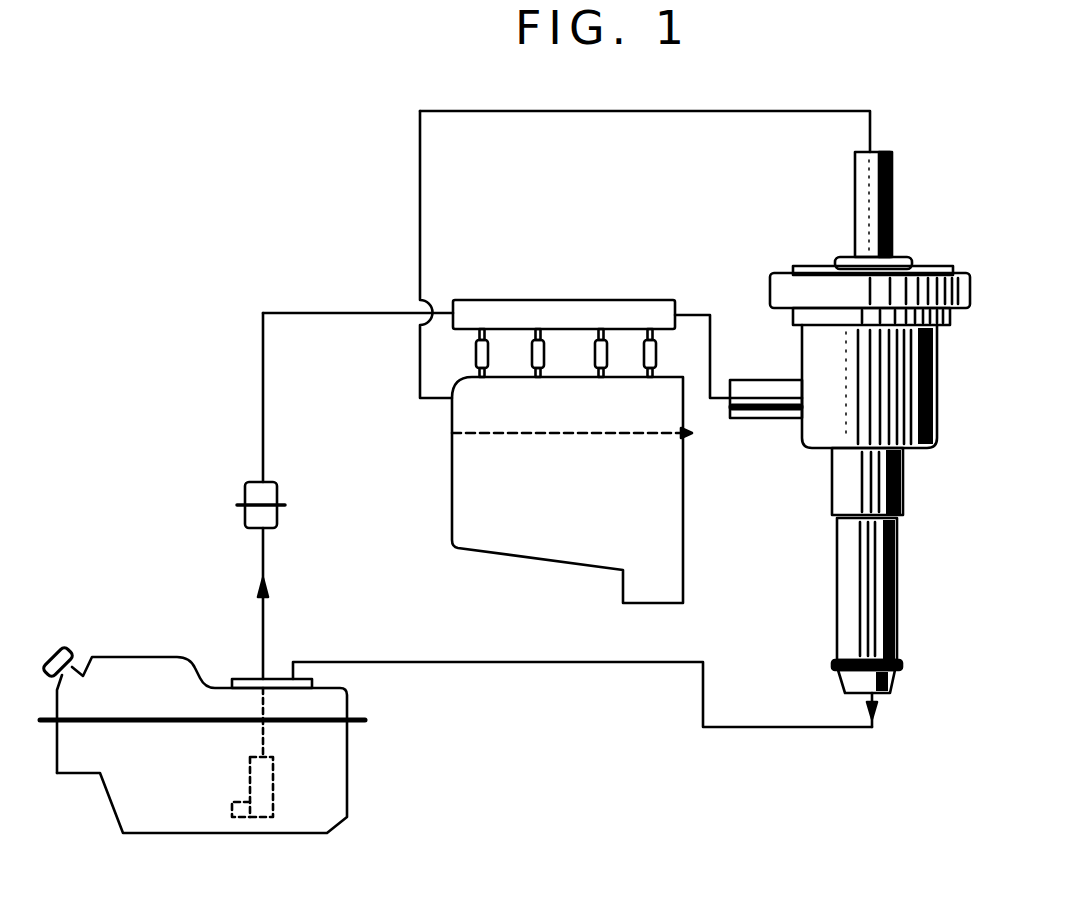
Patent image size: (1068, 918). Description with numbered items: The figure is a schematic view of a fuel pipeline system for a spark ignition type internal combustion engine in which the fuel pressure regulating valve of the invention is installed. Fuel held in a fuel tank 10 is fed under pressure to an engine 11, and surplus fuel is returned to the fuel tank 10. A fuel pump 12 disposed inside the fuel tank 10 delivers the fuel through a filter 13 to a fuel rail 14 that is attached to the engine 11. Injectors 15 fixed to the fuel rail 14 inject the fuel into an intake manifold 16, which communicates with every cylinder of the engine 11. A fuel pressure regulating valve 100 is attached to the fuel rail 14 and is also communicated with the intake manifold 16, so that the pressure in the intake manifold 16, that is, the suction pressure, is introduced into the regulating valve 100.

The fuel tank 10 is at (342, 696).
The engine 11 is at (477, 535).
The fuel pump 12 is at (276, 798).
The filter 13 is at (245, 485).
The fuel rail 14 is at (575, 302).
The injectors 15 is at (476, 353).
The intake manifold 16 is at (467, 411).
The fuel pressure regulating valve 100 is at (970, 290).